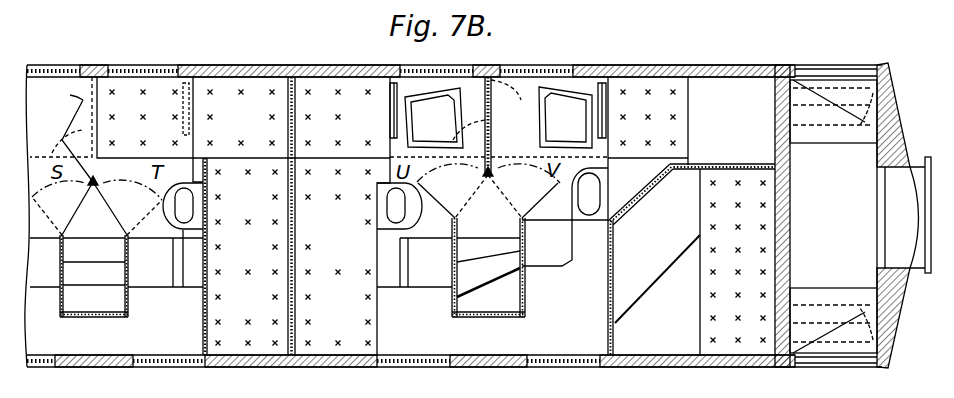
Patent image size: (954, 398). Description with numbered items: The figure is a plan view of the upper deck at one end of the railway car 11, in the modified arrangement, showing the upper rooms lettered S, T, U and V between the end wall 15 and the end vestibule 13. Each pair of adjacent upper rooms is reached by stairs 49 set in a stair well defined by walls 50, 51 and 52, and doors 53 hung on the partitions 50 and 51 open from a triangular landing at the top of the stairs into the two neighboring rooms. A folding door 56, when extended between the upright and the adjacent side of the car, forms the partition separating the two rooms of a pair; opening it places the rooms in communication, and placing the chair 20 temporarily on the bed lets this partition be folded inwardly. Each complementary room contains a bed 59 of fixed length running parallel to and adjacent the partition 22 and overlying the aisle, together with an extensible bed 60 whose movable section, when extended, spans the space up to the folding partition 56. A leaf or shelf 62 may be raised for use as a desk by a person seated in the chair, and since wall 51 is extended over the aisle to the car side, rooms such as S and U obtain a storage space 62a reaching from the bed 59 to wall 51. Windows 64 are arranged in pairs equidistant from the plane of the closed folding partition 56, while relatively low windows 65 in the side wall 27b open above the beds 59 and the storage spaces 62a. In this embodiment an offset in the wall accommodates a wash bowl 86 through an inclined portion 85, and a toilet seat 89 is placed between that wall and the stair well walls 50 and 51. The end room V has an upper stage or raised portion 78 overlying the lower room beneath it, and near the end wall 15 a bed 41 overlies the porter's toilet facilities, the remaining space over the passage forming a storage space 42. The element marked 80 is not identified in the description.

The car 11 is at (245, 65).
The end vestibule 13 is at (860, 215).
The end wall 15 is at (791, 188).
The chair 20 is at (498, 117).
The partition 22 is at (294, 229).
The side wall of the car 27b is at (259, 363).
The bed 41 is at (714, 319).
The storage space 42 is at (654, 268).
The stairs 49 is at (91, 277).
The wall 50 is at (62, 268).
The wall 51 is at (130, 267).
The wall 52 is at (83, 317).
The door 53 is at (72, 199).
The folding door 56 is at (78, 114).
The bed 59 is at (293, 218).
The extensible bed 60 is at (243, 129).
The leaf or shelf 62 is at (390, 115).
The storage space 62a is at (392, 335).
The window 64 is at (143, 68).
The window 65 is at (183, 362).
The upper stage or raised portion 78 is at (729, 92).
The washbasin unit 80 is at (545, 256).
The inclined portion 85 is at (197, 250).
The wash bowl 86 is at (200, 192).
The toilet seat 89 is at (419, 282).